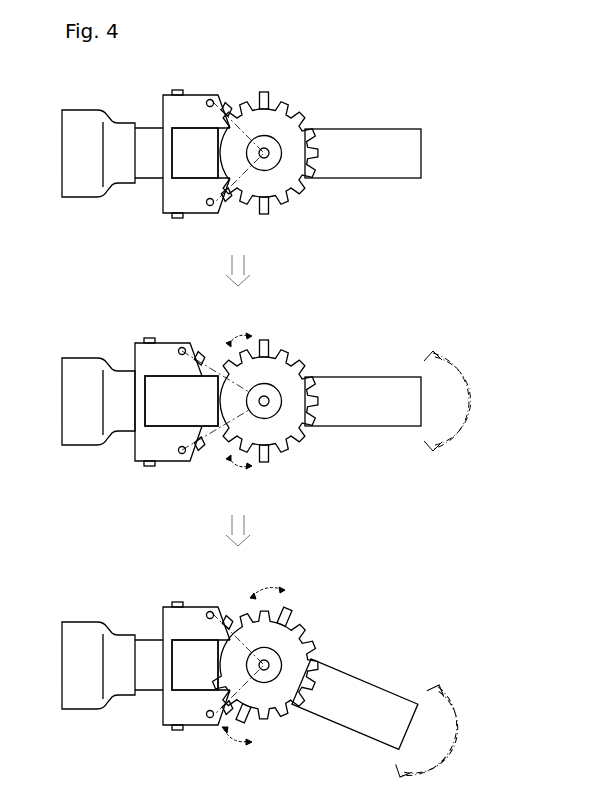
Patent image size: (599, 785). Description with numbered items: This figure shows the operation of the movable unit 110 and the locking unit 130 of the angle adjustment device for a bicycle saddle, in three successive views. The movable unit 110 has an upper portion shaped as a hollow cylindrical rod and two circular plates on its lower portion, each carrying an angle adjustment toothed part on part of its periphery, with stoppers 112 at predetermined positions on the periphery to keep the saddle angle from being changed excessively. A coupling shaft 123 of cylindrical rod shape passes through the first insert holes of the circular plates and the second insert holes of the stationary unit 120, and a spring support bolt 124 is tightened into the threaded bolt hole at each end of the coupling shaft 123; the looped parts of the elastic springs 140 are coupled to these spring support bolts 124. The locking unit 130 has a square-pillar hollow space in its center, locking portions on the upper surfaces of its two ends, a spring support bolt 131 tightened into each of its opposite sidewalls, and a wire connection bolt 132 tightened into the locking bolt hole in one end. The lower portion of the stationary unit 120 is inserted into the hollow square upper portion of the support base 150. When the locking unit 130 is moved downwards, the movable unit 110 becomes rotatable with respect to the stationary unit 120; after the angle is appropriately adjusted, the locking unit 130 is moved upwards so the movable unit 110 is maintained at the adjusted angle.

The movable unit 110 is at (387, 128).
The stoppers 112 is at (266, 91).
The stationary unit 120 is at (149, 179).
The coupling shaft 123 is at (268, 160).
The spring support bolt 124 is at (274, 138).
The locking unit 130 is at (196, 213).
The spring support bolt 131 is at (206, 99).
The wire connection bolt 132 is at (178, 89).
The elastic springs 140 is at (228, 110).
The support base 150 is at (77, 190).